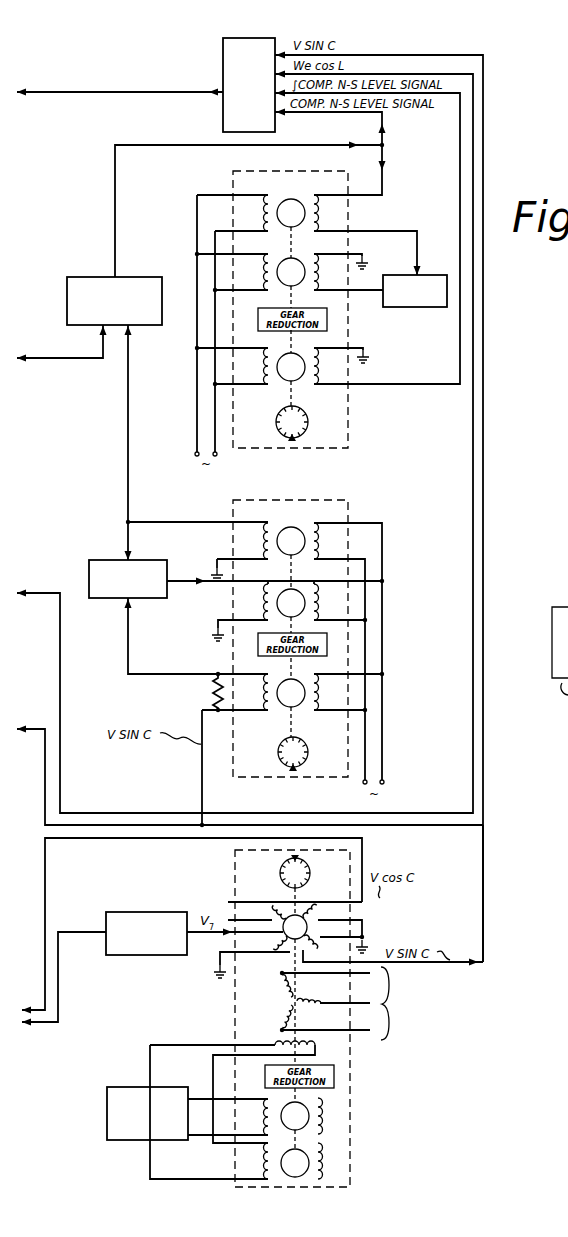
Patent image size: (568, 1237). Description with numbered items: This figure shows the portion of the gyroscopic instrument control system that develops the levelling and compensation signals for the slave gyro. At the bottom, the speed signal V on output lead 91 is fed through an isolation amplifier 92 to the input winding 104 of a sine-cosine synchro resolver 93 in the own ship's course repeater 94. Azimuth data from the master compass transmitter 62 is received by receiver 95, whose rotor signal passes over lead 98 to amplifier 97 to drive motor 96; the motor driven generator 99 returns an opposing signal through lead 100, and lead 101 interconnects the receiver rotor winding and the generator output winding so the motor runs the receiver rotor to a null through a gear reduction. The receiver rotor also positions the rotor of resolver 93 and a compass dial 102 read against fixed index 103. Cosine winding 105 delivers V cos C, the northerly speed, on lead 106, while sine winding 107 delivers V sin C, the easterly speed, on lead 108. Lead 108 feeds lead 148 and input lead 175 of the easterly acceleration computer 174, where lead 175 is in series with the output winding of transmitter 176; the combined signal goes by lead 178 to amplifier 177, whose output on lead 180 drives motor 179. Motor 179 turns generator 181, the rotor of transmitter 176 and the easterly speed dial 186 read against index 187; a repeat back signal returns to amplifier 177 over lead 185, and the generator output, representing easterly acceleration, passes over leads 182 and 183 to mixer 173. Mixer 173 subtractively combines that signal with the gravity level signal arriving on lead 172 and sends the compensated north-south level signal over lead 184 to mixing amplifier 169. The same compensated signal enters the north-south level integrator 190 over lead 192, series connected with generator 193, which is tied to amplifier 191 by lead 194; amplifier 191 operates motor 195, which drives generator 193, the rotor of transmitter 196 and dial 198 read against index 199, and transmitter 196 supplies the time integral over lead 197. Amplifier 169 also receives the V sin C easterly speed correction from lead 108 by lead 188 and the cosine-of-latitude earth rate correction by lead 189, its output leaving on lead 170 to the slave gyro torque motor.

The mixing amplifier 169 is at (223, 58).
The lead 170 is at (87, 90).
The lead 184 is at (144, 146).
The lead 188 is at (484, 493).
The lead 189 is at (39, 592).
The lead 197 is at (416, 386).
The lead 192 is at (384, 173).
The north-south level integrator 190 is at (290, 326).
The generator 193 is at (291, 199).
The lead 194 is at (400, 233).
The motor 195 is at (284, 260).
The amplifier 191 is at (428, 308).
The signal transmitter 196 is at (278, 386).
The dial 198 is at (306, 418).
The index 199 is at (286, 438).
The mixer 173 is at (72, 277).
The lead 172 is at (55, 361).
The lead 183 is at (127, 441).
The lead 185 is at (131, 537).
The lead 182 is at (163, 521).
The amplifier 177 is at (96, 560).
The easterly acceleration computer 174 is at (290, 656).
The generator 181 is at (300, 529).
The lead 180 is at (214, 584).
The motor 179 is at (300, 590).
The transmitter 176 is at (302, 700).
The lead 178 is at (127, 647).
The input lead 175 is at (200, 780).
The dial 186 is at (308, 748).
The index 187 is at (288, 768).
The lead 148 is at (35, 727).
The lead 106 is at (152, 840).
The output lead 91 is at (42, 1026).
The isolation amplifier 92 is at (162, 912).
The lead 108 is at (484, 918).
The own ship's course repeater 94 is at (234, 1002).
The compass dial 102 is at (305, 878).
The fixed index 103 is at (290, 857).
The sine-cosine synchro resolver 93 is at (340, 912).
The cosine winding 105 is at (312, 908).
The input winding 104 is at (284, 946).
The sine winding 107 is at (318, 946).
The receiver 95 is at (262, 1010).
The transmitter 62 is at (430, 1003).
The lead 98 is at (181, 1044).
The lead 101 is at (212, 1078).
The lead 100 is at (188, 1178).
The amplifier 97 is at (107, 1094).
The motor 96 is at (320, 1117).
The generator 99 is at (320, 1165).